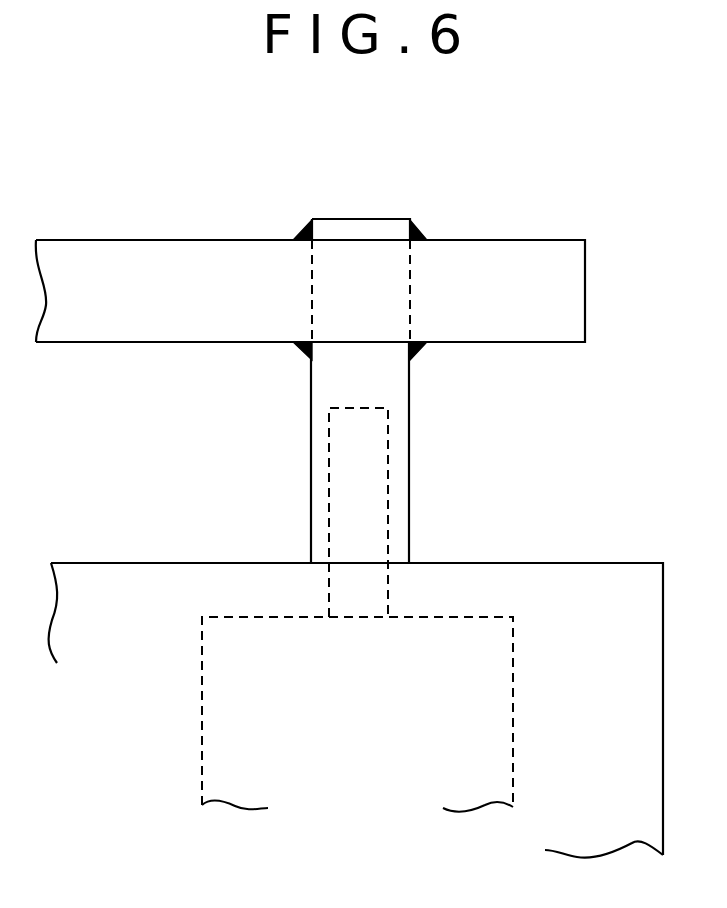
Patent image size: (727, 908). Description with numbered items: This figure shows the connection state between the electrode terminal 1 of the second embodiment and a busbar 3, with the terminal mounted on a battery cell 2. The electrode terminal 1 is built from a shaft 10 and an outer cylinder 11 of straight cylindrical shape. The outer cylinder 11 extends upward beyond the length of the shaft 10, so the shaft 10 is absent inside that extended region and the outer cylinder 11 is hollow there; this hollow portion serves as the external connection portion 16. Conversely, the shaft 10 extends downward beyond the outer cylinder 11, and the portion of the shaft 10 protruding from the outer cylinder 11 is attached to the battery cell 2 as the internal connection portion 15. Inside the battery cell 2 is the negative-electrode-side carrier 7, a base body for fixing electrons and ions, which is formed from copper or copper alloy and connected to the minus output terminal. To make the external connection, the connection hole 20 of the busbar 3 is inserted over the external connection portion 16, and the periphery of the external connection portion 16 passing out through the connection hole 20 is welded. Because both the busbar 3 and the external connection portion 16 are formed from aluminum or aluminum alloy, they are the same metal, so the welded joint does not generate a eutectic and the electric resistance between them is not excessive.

The electrode terminal 1 is at (402, 207).
The battery cell 2 is at (633, 562).
The busbar 3 is at (120, 238).
The negative-electrode-side carrier 7 is at (516, 712).
The shaft 10 is at (328, 517).
The outer cylinder 11 is at (310, 437).
The internal connection portion 15 is at (388, 591).
The external connection portion 16 is at (409, 290).
The connection hole 20 is at (318, 298).